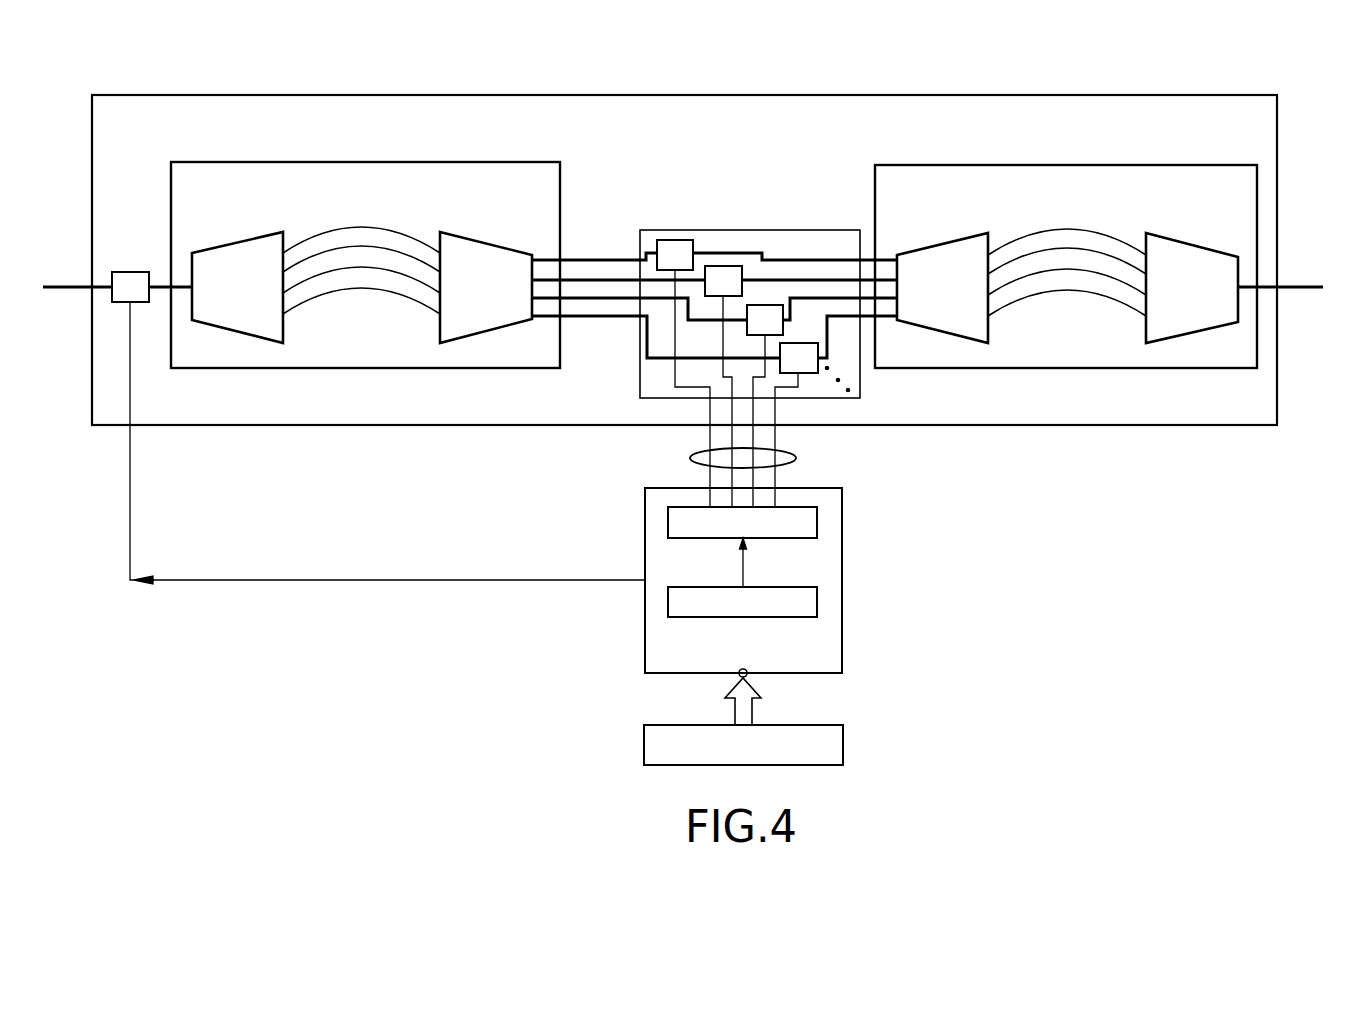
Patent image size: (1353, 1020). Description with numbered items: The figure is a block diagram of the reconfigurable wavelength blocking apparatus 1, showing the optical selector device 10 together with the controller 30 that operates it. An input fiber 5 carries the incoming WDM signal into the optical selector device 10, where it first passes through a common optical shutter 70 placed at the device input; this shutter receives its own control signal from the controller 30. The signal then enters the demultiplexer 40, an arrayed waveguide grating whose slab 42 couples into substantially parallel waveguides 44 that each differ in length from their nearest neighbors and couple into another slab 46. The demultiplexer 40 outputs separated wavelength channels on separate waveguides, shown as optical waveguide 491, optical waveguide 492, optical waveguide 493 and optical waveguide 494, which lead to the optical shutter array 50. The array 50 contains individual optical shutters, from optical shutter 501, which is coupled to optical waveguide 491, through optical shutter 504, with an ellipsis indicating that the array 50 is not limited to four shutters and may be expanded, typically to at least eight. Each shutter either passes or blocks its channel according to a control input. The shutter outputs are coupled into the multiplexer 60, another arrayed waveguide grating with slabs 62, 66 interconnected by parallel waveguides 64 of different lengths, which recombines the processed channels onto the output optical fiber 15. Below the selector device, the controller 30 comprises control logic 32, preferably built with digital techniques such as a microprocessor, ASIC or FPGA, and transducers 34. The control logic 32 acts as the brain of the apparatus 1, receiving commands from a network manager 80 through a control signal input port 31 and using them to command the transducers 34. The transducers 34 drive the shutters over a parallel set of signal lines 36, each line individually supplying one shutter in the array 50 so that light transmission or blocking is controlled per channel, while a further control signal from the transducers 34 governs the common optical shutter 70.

The reconfigurable wavelength blocking apparatus 1 is at (1047, 493).
The input fiber 5 is at (52, 283).
The optical selector device 10 is at (840, 135).
The output optical fiber 15 is at (1297, 285).
The controller 30 is at (814, 663).
The control signal input port 31 is at (749, 679).
The control logic 32 is at (817, 597).
The transducers 34 is at (817, 517).
The signal lines 36 is at (797, 457).
The demultiplexer 40 is at (543, 198).
The slab 42 is at (216, 250).
The waveguides 44 is at (355, 227).
The slab 46 is at (507, 330).
The optical waveguide 491 is at (577, 259).
The optical waveguide 492 is at (615, 279).
The optical waveguide 493 is at (595, 300).
The optical waveguide 494 is at (627, 318).
The optical shutter array 50 is at (773, 230).
The optical shutter 501 is at (665, 240).
The optical shutter 504 is at (812, 377).
The multiplexer 60 is at (1248, 201).
The slab 62 is at (923, 252).
The waveguides 64 is at (1075, 227).
The slab 66 is at (1195, 340).
The common optical shutter 70 is at (128, 270).
The network manager 80 is at (843, 743).